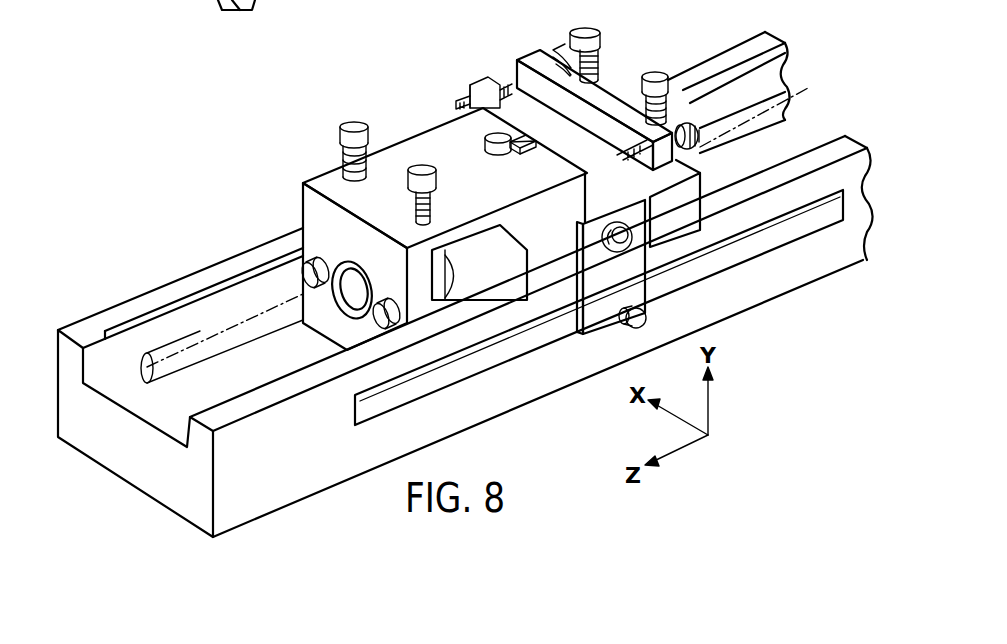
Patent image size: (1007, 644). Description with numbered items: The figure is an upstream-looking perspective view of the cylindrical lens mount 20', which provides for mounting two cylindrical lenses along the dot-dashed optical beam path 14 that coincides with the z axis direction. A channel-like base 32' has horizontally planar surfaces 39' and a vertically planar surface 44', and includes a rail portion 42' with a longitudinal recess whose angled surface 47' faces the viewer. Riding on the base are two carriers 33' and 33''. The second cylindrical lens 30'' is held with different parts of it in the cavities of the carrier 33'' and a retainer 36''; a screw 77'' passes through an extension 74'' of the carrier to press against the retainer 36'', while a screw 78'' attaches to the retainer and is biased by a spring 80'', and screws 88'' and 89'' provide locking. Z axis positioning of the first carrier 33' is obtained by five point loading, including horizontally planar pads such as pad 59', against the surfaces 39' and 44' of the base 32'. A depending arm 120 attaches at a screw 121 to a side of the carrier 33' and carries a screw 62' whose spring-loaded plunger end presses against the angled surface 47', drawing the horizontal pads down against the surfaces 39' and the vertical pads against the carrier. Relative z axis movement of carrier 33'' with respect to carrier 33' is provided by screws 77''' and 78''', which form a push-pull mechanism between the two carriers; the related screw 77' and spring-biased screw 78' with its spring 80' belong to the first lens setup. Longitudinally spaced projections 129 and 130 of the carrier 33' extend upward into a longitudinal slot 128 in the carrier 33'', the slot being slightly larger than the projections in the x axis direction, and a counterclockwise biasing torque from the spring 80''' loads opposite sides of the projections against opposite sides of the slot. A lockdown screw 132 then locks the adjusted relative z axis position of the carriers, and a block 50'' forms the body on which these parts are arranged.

The lens mount 20' is at (158, 150).
The optical beam path 14 is at (215, 350).
The base 32' is at (465, 289).
The horizontally planar surface 39' is at (164, 373).
The vertically planar surface 44' is at (306, 421).
The rail portion 42' is at (834, 131).
The angled surface 47' is at (599, 307).
The carrier 33' is at (703, 201).
The carrier 33'' is at (395, 105).
The lens holder block 50'' is at (408, 229).
The extension 74'' is at (289, 157).
The cylindrical lens 30'' is at (353, 275).
The horizontally planar pad 59' is at (479, 262).
The retainer 36'' is at (465, 338).
The locking screw 89'' is at (276, 285).
The locking screw 88'' is at (338, 332).
The screw 78'' is at (328, 126).
The spring 80'' is at (383, 163).
The screw 77'' is at (393, 195).
The longitudinal slot 128 is at (478, 152).
The projection 129 is at (466, 170).
The projection 130 is at (530, 142).
The lockdown screw 132 is at (490, 85).
The spring 80''' is at (542, 39).
The screw 77' is at (607, 42).
The screw 78''' is at (625, 70).
The screw 78' is at (665, 80).
The spring 80' is at (700, 120).
The screw 77''' is at (751, 111).
The depending arm 120 is at (643, 292).
The screw 121 is at (618, 252).
The screw 62' is at (599, 343).